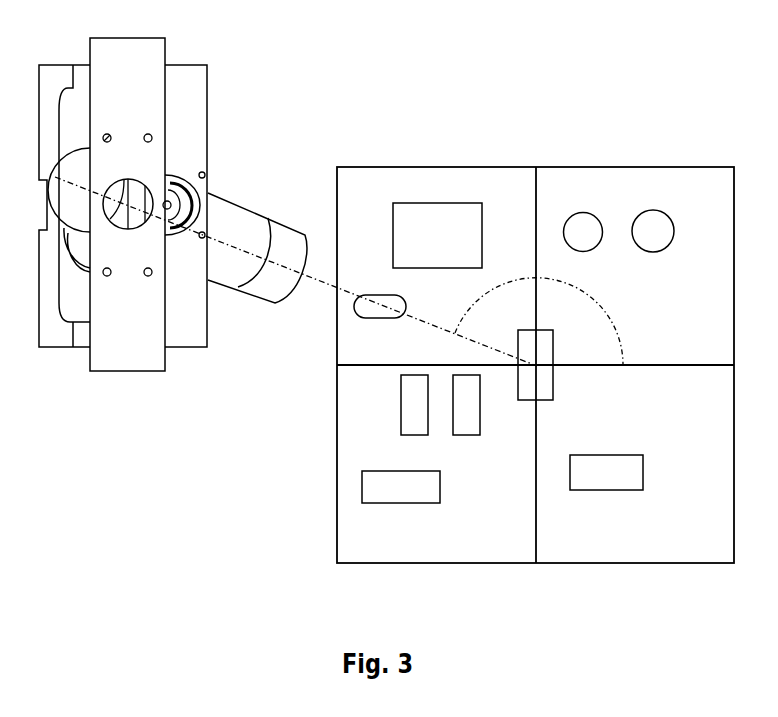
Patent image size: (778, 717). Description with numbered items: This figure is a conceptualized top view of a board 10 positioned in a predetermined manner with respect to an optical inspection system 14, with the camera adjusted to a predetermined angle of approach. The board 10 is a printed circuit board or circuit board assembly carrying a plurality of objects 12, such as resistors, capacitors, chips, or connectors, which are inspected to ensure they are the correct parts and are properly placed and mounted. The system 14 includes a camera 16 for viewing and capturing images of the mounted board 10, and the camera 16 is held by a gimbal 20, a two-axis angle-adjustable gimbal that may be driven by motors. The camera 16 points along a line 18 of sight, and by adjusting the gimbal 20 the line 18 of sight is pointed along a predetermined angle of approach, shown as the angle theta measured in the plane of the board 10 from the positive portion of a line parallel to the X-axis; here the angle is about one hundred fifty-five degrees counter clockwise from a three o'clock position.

The board 10 is at (336, 427).
The objects 12 is at (465, 413).
The optical inspection system 14 is at (84, 544).
The camera 16 is at (262, 214).
The line of sight 18 is at (320, 282).
The gimbal 20 is at (111, 383).